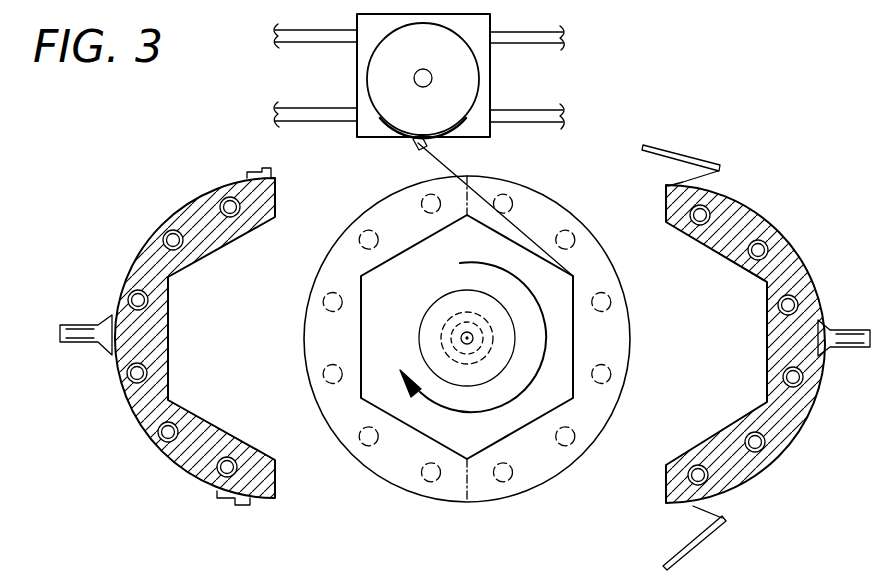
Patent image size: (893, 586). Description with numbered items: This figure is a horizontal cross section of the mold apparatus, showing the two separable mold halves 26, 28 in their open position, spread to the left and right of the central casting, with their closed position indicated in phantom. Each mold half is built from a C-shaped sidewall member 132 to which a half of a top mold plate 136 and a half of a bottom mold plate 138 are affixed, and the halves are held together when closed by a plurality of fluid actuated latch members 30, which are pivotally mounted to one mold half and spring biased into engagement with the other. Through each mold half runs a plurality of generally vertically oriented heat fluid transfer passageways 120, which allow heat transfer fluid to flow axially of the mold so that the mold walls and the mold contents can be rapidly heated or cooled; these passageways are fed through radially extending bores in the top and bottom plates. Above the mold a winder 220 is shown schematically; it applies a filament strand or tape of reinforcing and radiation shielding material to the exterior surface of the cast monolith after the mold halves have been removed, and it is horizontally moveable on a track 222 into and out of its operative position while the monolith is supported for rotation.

The mold half 26 is at (159, 322).
The mold half 28 is at (777, 458).
The fluid actuated latch members 30 is at (688, 158).
The heat fluid transfer passageways 120 is at (165, 236).
The C-shaped sidewall member 132 is at (159, 334).
The top mold plate 136 is at (122, 402).
The bottom mold plate 138 is at (768, 354).
The winder 220 is at (461, 78).
The track 222 is at (320, 31).